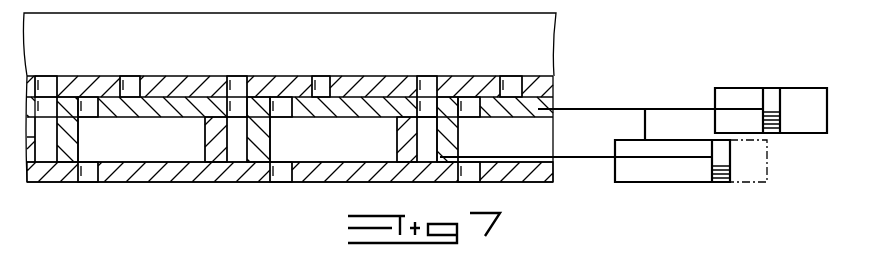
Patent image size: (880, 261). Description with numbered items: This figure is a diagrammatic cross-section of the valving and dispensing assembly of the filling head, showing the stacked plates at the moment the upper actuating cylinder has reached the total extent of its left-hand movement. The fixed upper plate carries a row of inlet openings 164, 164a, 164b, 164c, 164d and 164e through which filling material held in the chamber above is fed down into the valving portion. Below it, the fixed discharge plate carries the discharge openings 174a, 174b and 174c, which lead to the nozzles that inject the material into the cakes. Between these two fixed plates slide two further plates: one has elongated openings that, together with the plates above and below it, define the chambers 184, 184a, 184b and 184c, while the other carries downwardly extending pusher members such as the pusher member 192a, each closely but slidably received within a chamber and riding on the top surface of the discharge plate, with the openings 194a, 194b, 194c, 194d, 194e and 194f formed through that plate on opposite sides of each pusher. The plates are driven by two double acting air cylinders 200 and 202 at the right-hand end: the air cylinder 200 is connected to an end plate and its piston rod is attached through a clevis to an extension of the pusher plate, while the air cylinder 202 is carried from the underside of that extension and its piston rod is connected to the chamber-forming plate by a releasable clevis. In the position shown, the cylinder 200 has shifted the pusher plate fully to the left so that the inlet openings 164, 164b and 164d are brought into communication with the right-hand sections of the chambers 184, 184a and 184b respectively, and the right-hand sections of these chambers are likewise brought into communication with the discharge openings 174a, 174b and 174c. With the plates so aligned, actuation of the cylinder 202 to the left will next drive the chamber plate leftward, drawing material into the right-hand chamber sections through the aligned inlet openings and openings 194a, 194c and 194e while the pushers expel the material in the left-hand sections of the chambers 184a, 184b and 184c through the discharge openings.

The inlet opening 164 is at (43, 76).
The inlet opening 164a is at (132, 76).
The inlet opening 164b is at (237, 76).
The inlet opening 164c is at (322, 76).
The inlet opening 164d is at (427, 76).
The inlet opening 164e is at (511, 76).
The discharge opening 174a is at (90, 183).
The discharge opening 174b is at (284, 183).
The discharge opening 174c is at (470, 183).
The chamber 184 is at (290, 184).
The chamber 184a is at (196, 139).
The chamber 184b is at (381, 139).
The chamber 184c is at (576, 150).
The pusher member 192a is at (82, 134).
The opening 194a is at (67, 117).
The opening 194b is at (88, 119).
The opening 194c is at (252, 124).
The opening 194d is at (290, 120).
The opening 194e is at (426, 121).
The opening 194f is at (466, 120).
The air cylinder 200 is at (742, 88).
The air cylinder 202 is at (686, 182).